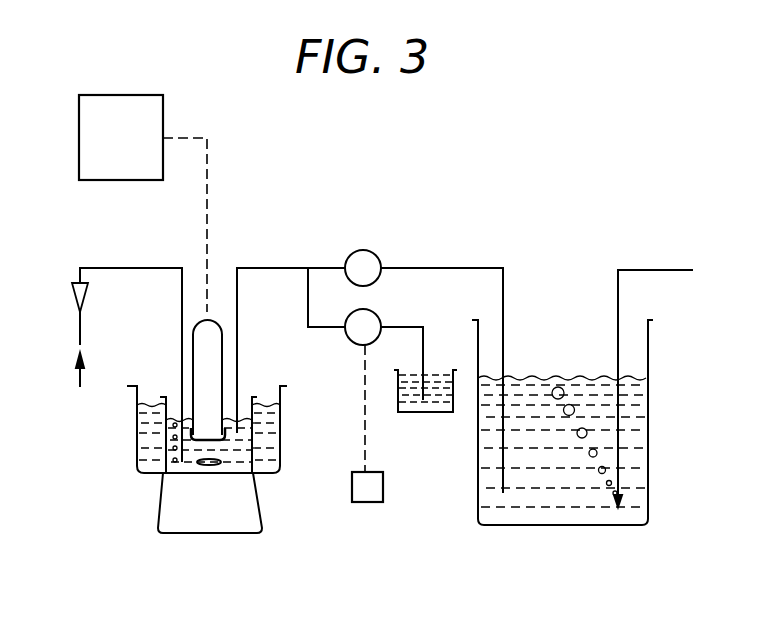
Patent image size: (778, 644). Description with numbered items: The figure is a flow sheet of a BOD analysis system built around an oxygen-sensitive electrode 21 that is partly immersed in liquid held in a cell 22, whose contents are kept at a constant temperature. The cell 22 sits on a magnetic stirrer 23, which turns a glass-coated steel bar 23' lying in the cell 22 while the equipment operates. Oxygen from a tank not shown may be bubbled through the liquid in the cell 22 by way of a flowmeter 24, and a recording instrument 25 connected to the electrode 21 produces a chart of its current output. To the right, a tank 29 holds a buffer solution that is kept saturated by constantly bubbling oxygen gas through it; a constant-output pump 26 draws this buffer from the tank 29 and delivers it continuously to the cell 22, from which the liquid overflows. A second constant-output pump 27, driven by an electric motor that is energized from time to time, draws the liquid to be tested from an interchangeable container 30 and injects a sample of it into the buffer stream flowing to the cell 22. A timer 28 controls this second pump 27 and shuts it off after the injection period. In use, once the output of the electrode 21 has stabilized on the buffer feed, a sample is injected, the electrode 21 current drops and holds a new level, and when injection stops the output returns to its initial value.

The oxygen-sensitive electrode 21 is at (212, 348).
The cell 22 is at (240, 456).
The magnetic stirrer 23 is at (210, 520).
The glass-coated steel bar 23' is at (199, 487).
The flowmeter 24 is at (75, 298).
The recording instrument 25 is at (79, 153).
The constant-output pump 26 is at (398, 228).
The constant-output pump 27 is at (378, 313).
The timer 28 is at (370, 492).
The tank 29 is at (638, 457).
The interchangeable container 30 is at (437, 407).